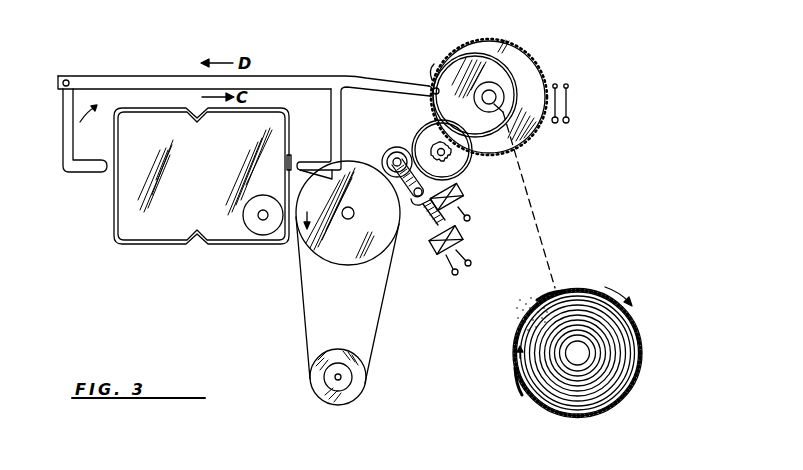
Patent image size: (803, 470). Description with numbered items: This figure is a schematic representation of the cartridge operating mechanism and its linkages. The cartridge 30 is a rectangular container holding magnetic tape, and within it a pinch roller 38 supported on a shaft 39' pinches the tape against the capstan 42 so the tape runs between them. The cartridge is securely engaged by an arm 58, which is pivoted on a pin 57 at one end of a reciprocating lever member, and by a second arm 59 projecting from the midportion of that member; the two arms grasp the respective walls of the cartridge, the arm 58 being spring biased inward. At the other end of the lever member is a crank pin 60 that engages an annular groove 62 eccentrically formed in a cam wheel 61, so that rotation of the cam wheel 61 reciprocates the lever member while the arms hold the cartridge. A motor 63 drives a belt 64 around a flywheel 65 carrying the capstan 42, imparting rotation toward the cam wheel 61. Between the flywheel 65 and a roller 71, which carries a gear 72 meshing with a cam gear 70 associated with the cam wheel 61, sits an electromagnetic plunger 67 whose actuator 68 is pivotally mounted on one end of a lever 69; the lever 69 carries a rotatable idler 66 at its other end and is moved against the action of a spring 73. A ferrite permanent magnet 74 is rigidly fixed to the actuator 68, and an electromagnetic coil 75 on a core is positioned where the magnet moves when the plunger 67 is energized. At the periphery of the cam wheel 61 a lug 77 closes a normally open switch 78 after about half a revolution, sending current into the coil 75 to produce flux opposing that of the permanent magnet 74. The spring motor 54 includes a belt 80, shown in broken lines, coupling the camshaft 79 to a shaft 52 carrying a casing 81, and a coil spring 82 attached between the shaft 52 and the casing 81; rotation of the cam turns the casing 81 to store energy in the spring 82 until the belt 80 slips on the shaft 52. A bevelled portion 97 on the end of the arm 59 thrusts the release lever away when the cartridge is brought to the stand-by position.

The cartridge 30 is at (112, 230).
The pinch roller 38 is at (252, 232).
The shaft 39' is at (264, 242).
The capstan 42 is at (347, 220).
The shaft 52 is at (576, 340).
The spring motor 54 is at (664, 407).
The pin 57 is at (68, 80).
The arm 58 is at (63, 140).
The second arm 59 is at (332, 122).
The crank pin 60 is at (421, 83).
The cam wheel 61 is at (528, 66).
The annular groove 62 is at (459, 40).
The motor 63 is at (367, 367).
The belt 64 is at (385, 287).
The flywheel 65 is at (343, 268).
The rotatable idler 66 is at (388, 152).
The electromagnetic plunger 67 is at (442, 254).
The actuator 68 is at (425, 218).
The lever 69 is at (392, 185).
The cam gear 70 is at (491, 37).
The roller 71 is at (431, 128).
The gear 72 is at (431, 147).
The spring 73 is at (431, 226).
The permanent magnet 74 is at (460, 188).
The electromagnetic coil 75 is at (467, 208).
The lug 77 is at (429, 73).
The switch 78 is at (569, 101).
The camshaft 79 is at (520, 139).
The belt 80 is at (536, 228).
The casing 81 is at (517, 334).
The coil spring 82 is at (633, 334).
The bevelled portion 97 is at (306, 176).